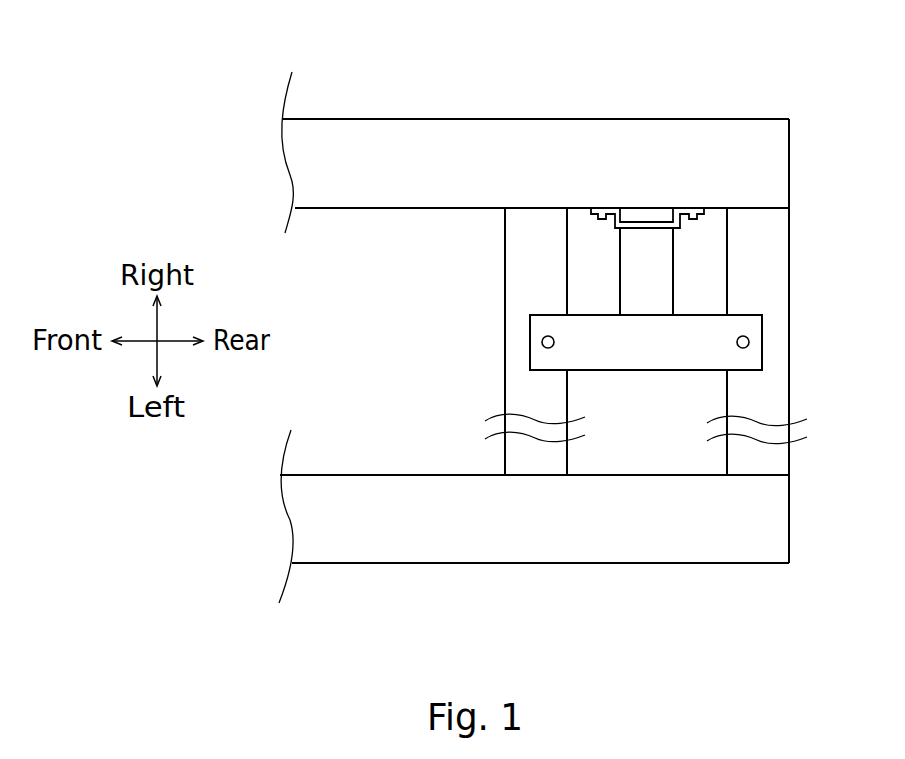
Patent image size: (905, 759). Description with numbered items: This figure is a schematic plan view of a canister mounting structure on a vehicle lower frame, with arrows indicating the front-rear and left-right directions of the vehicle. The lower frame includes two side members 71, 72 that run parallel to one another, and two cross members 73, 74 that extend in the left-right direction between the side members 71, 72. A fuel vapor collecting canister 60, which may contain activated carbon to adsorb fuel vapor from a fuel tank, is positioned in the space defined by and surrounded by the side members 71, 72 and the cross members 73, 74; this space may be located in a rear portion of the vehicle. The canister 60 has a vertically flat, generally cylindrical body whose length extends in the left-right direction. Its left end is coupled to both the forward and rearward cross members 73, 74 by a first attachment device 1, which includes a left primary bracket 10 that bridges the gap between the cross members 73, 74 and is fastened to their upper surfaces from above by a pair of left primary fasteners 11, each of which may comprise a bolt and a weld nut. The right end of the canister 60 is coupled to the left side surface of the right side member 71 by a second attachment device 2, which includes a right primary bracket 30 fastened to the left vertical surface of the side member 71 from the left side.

The first attachment device 1 is at (620, 376).
The second attachment device 2 is at (612, 230).
The left primary bracket 10 is at (658, 358).
The left primary fastener 11 is at (542, 342).
The right primary bracket 30 is at (700, 228).
The fuel vapor collecting canister 60 is at (662, 280).
The side member 71 is at (530, 130).
The side member 72 is at (526, 550).
The cross member 73 is at (513, 298).
The cross member 74 is at (778, 403).